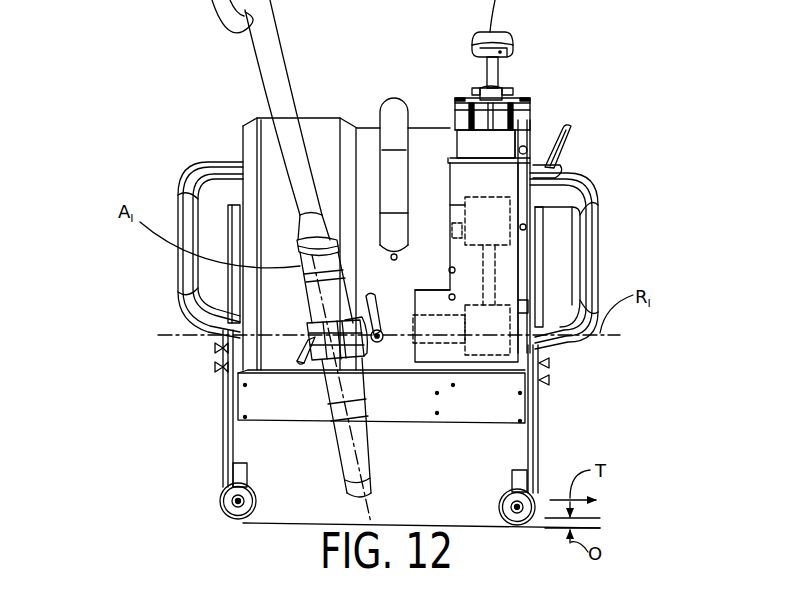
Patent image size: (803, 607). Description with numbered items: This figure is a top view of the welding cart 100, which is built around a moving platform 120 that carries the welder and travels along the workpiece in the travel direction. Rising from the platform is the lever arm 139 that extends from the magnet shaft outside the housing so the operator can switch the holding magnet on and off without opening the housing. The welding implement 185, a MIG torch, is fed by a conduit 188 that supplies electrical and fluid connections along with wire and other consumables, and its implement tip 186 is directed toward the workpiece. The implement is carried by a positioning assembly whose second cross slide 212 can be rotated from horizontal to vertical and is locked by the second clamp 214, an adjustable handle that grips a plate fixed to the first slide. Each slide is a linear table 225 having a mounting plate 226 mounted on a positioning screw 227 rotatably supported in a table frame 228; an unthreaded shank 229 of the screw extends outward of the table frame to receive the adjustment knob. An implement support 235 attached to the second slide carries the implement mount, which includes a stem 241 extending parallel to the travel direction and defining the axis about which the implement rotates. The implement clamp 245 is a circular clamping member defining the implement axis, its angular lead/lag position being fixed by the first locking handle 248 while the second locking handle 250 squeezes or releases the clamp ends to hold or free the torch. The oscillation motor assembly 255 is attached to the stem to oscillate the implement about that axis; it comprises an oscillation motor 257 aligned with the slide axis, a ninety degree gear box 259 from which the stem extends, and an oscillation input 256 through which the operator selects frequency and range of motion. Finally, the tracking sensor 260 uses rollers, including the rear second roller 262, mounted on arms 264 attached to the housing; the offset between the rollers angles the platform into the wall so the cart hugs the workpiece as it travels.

The cart 100 is at (158, 127).
The moving platform 120 is at (318, 113).
The lever arm 139 is at (397, 153).
The implement 185 is at (366, 429).
The implement tip 186 is at (372, 492).
The conduit 188 is at (275, 53).
The second cross slide 212 is at (468, 148).
The second clamp 214 is at (545, 168).
The linear table 225 is at (468, 66).
The mounting plate 226 is at (528, 128).
The positioning screw 227 is at (490, 123).
The table frame 228 is at (508, 142).
The shank 229 is at (500, 72).
The implement support 235 is at (497, 277).
The stem 241 is at (409, 318).
The implement clamp 245 is at (347, 352).
The first locking handle 248 is at (380, 213).
The second locking handle 250 is at (290, 353).
The oscillation motor assembly 255 is at (472, 236).
The oscillation input 256 is at (456, 230).
The oscillation motor 257 is at (444, 210).
The gear box 259 is at (497, 343).
The tracking sensor 260 is at (543, 462).
The second roller 262 is at (233, 517).
The arms 264 is at (222, 418).